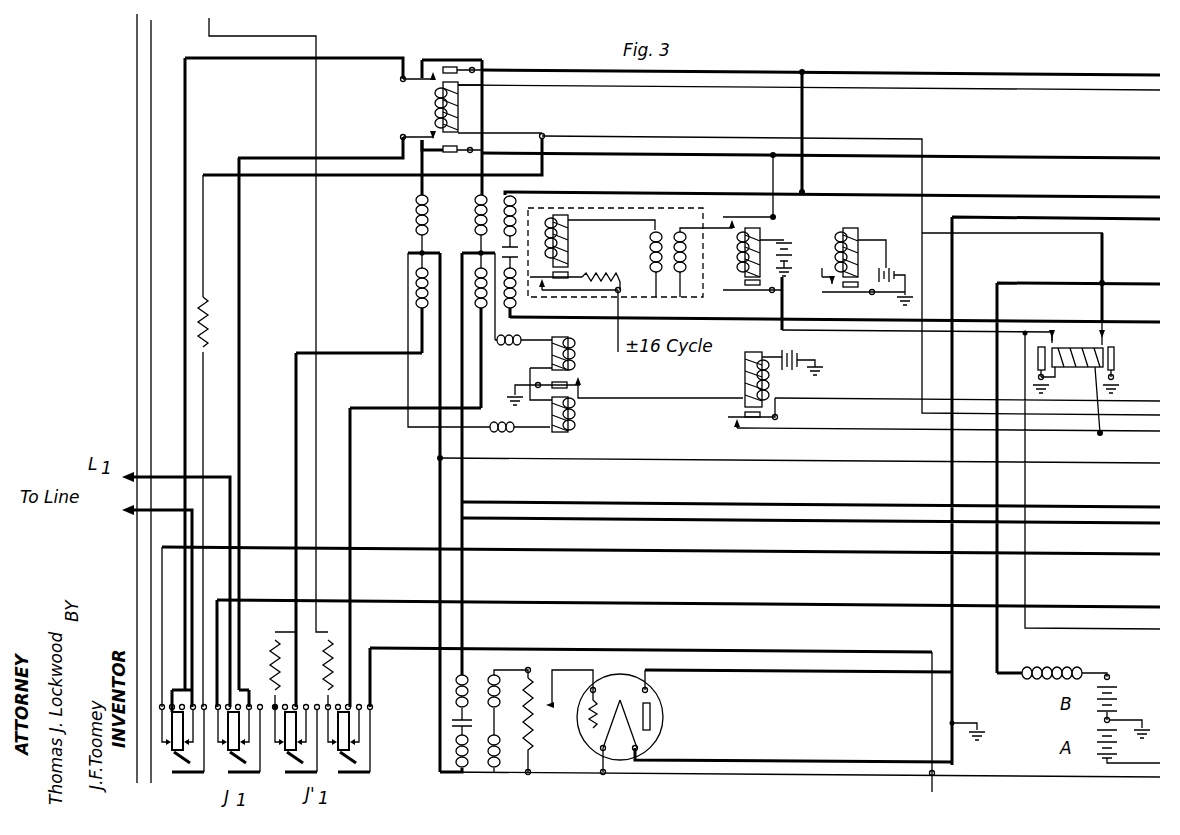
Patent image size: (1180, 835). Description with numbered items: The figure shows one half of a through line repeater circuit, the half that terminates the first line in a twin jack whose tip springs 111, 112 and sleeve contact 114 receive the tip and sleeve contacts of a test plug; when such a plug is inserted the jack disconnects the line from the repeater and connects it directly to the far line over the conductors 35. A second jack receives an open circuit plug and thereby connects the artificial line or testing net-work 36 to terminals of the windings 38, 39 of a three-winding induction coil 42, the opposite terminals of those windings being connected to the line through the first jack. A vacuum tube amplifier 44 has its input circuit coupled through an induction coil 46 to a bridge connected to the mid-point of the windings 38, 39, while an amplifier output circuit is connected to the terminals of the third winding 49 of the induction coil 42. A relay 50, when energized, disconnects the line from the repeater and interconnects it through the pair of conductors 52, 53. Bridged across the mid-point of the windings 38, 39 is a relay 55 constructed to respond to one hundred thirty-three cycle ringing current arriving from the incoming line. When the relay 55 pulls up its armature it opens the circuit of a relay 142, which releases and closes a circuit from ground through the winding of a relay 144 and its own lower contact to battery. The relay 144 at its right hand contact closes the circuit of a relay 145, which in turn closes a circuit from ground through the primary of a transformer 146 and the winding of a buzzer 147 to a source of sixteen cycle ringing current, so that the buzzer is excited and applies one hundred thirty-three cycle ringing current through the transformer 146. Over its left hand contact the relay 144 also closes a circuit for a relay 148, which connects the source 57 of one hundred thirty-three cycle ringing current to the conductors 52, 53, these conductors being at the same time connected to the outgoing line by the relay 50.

The conductors 35 is at (658, 600).
The testing net-work 36 is at (331, 642).
The winding 38 is at (412, 278).
The winding 39 is at (477, 214).
The three-winding induction coil 42 is at (439, 204).
The vacuum tube amplifier 44 is at (655, 698).
The induction coil 46 is at (516, 714).
The third winding 49 is at (500, 203).
The relay 50 is at (443, 102).
The conductor 52 is at (879, 73).
The conductor 53 is at (936, 157).
The relay 55 is at (570, 362).
The source of 133 cycle ringing current 57 is at (608, 274).
The tip spring 111 is at (178, 760).
The tip spring 112 is at (248, 762).
The sleeve contact 114 is at (190, 760).
The relay 142 is at (763, 389).
The relay 144 is at (1076, 378).
The relay 145 is at (858, 252).
The transformer 146 is at (673, 258).
The buzzer 147 is at (592, 252).
The relay 148 is at (752, 255).